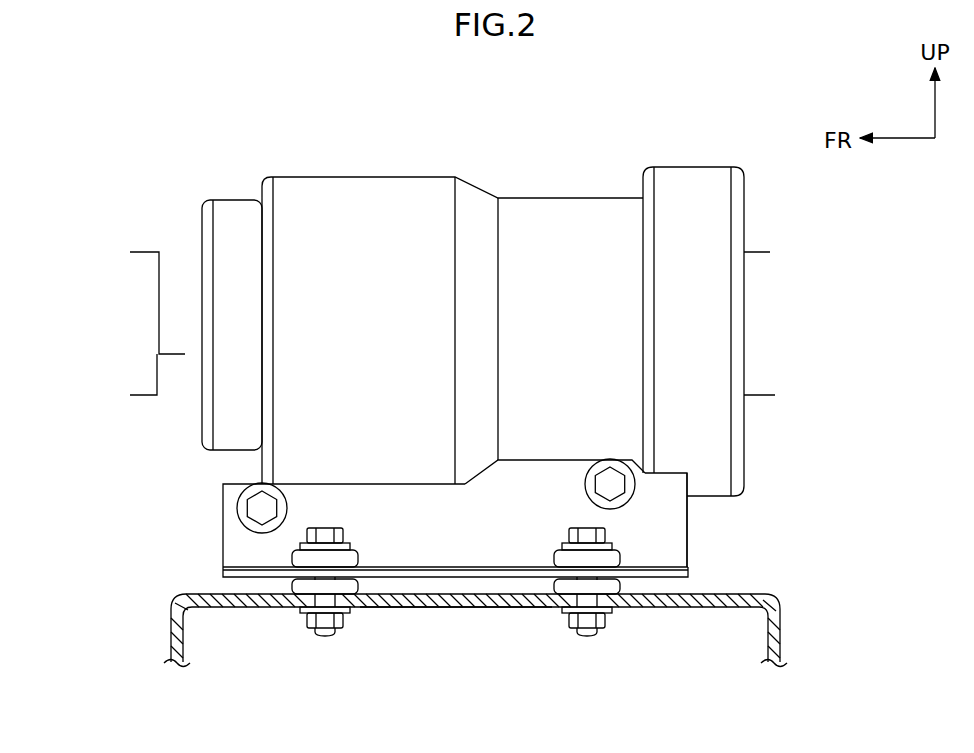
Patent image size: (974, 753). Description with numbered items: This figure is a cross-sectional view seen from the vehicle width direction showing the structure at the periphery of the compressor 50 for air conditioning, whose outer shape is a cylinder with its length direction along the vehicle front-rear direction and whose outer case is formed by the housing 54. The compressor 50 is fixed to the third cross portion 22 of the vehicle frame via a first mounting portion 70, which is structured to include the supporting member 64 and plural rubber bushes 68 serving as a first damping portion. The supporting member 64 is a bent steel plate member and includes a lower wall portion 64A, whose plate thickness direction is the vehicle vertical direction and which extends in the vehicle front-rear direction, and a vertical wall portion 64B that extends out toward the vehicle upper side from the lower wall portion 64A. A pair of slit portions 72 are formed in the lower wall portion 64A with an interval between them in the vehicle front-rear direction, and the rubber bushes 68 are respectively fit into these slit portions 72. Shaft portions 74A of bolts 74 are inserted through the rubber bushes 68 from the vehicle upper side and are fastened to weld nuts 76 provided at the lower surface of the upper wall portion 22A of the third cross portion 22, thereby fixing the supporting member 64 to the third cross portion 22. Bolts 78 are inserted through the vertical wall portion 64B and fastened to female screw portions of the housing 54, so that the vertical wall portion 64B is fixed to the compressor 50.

The third cross portion 22 is at (172, 627).
The upper wall portion 22A is at (488, 608).
The compressor for air conditioning 50 is at (250, 150).
The housing 54 is at (292, 215).
The supporting member 64 is at (220, 482).
The lower wall portion 64A is at (223, 572).
The vertical wall portion 64B is at (678, 528).
The rubber bush 68 is at (290, 583).
The first mounting portion 70 is at (185, 520).
The slit portion 72 is at (333, 562).
The bolt 74 is at (333, 528).
The shaft portion 74A is at (327, 636).
The weld nut 76 is at (338, 628).
The bolt 78 is at (263, 507).